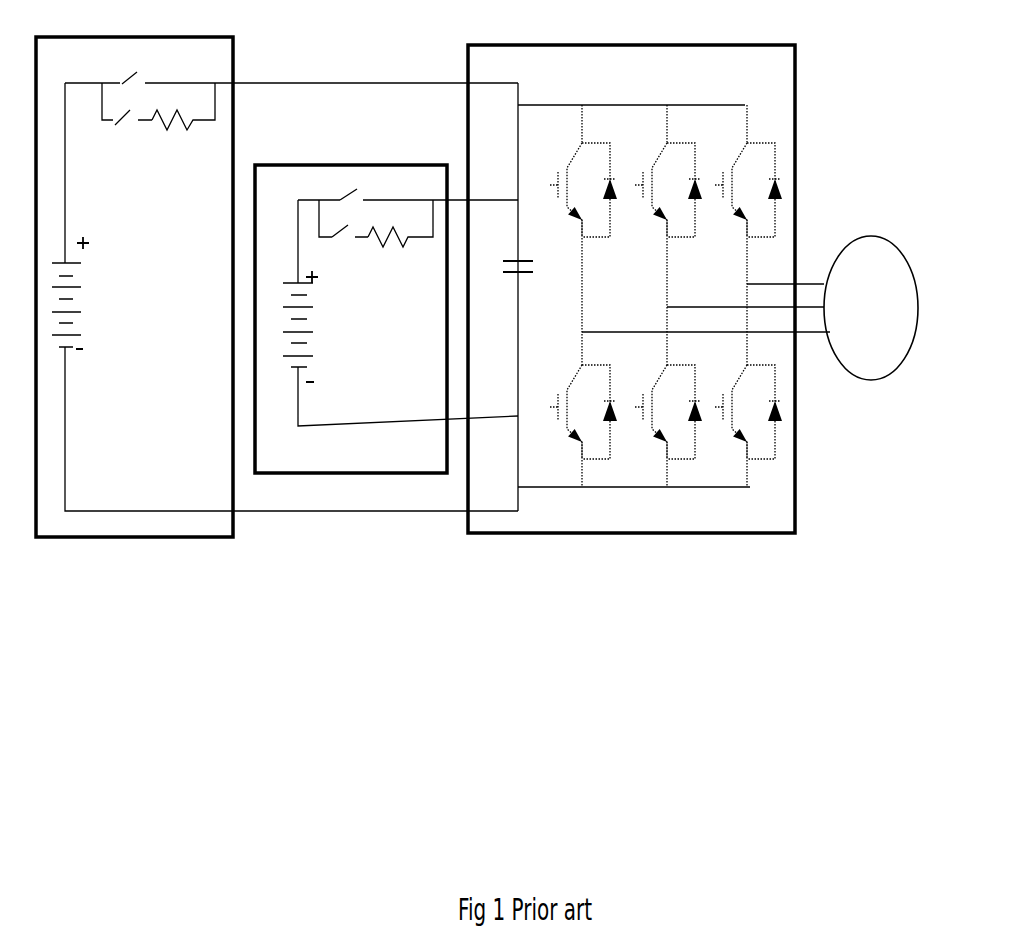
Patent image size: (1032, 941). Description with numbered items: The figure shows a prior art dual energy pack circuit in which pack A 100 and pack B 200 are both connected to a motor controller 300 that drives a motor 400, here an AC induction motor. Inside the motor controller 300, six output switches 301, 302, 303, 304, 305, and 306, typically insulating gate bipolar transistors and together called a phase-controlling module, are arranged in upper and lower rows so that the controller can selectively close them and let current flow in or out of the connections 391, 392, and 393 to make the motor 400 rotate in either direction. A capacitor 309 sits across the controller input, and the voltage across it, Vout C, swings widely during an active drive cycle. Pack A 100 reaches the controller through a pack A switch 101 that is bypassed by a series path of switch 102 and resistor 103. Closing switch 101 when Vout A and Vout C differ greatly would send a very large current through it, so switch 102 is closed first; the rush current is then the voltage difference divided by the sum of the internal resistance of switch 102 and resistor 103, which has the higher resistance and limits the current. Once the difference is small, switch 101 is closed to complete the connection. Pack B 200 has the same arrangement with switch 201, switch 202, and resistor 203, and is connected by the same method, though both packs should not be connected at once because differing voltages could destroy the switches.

The pack A 100 is at (165, 42).
The pack A switch 101 is at (122, 75).
The switch 102 is at (117, 125).
The resistor 103 is at (168, 135).
The pack B 200 is at (378, 158).
The switch 201 is at (348, 190).
The switch 202 is at (333, 242).
The resistor 203 is at (392, 252).
The motor controller 300 is at (618, 40).
The output switch 301 is at (575, 207).
The output switch 302 is at (660, 207).
The output switch 303 is at (740, 207).
The output switch 304 is at (575, 429).
The output switch 305 is at (660, 429).
The output switch 306 is at (740, 429).
The capacitor 309 is at (512, 278).
The connection 391 is at (785, 278).
The connection 392 is at (745, 303).
The connection 393 is at (706, 327).
The motor 400 is at (882, 228).